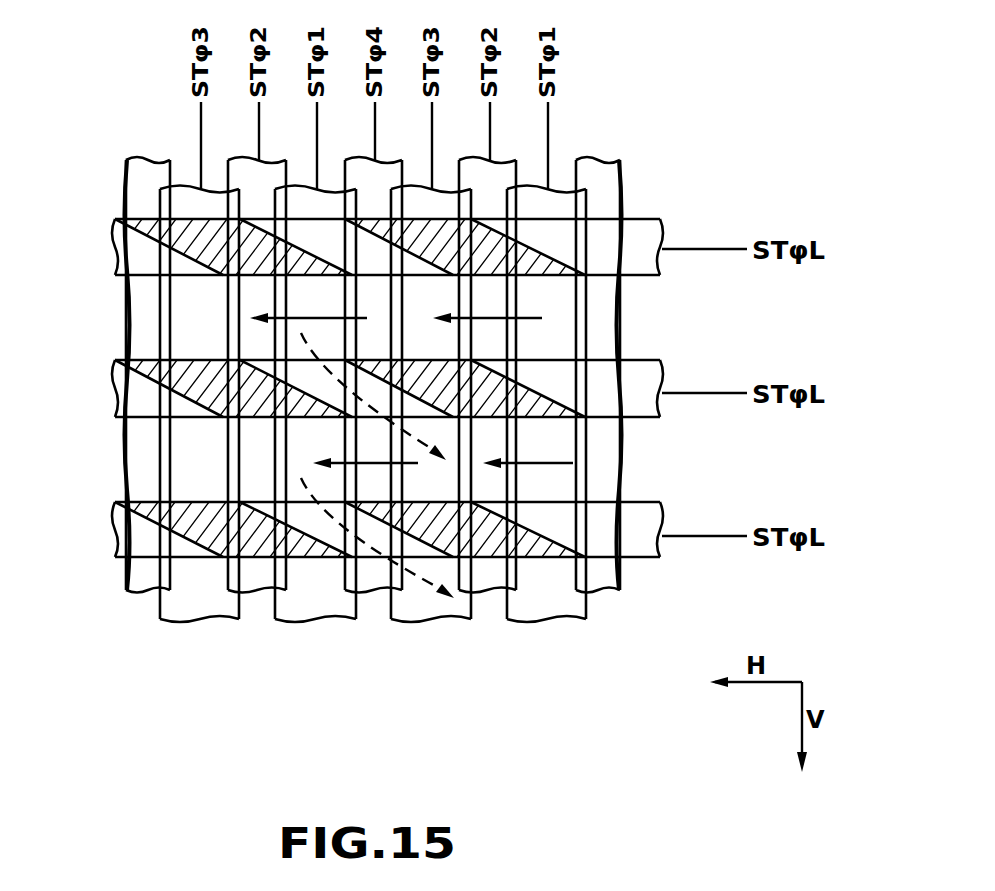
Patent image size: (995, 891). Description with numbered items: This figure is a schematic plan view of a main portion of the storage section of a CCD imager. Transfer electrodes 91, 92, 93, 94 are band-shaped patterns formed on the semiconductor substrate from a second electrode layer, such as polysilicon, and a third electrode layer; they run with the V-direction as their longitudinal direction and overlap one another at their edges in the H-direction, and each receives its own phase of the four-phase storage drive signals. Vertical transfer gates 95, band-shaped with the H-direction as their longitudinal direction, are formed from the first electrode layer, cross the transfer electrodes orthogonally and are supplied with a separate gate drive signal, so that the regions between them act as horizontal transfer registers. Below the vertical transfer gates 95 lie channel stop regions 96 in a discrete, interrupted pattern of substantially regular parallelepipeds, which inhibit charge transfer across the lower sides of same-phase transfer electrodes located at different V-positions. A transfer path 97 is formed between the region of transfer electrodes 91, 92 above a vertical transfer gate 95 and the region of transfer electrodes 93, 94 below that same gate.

The transfer electrode 91 is at (573, 662).
The transfer electrode 92 is at (513, 662).
The transfer electrode 93 is at (452, 668).
The transfer electrode 94 is at (400, 662).
The vertical transfer gate 95 is at (633, 545).
The channel stop region 96 is at (517, 243).
The transfer path 97 is at (300, 508).